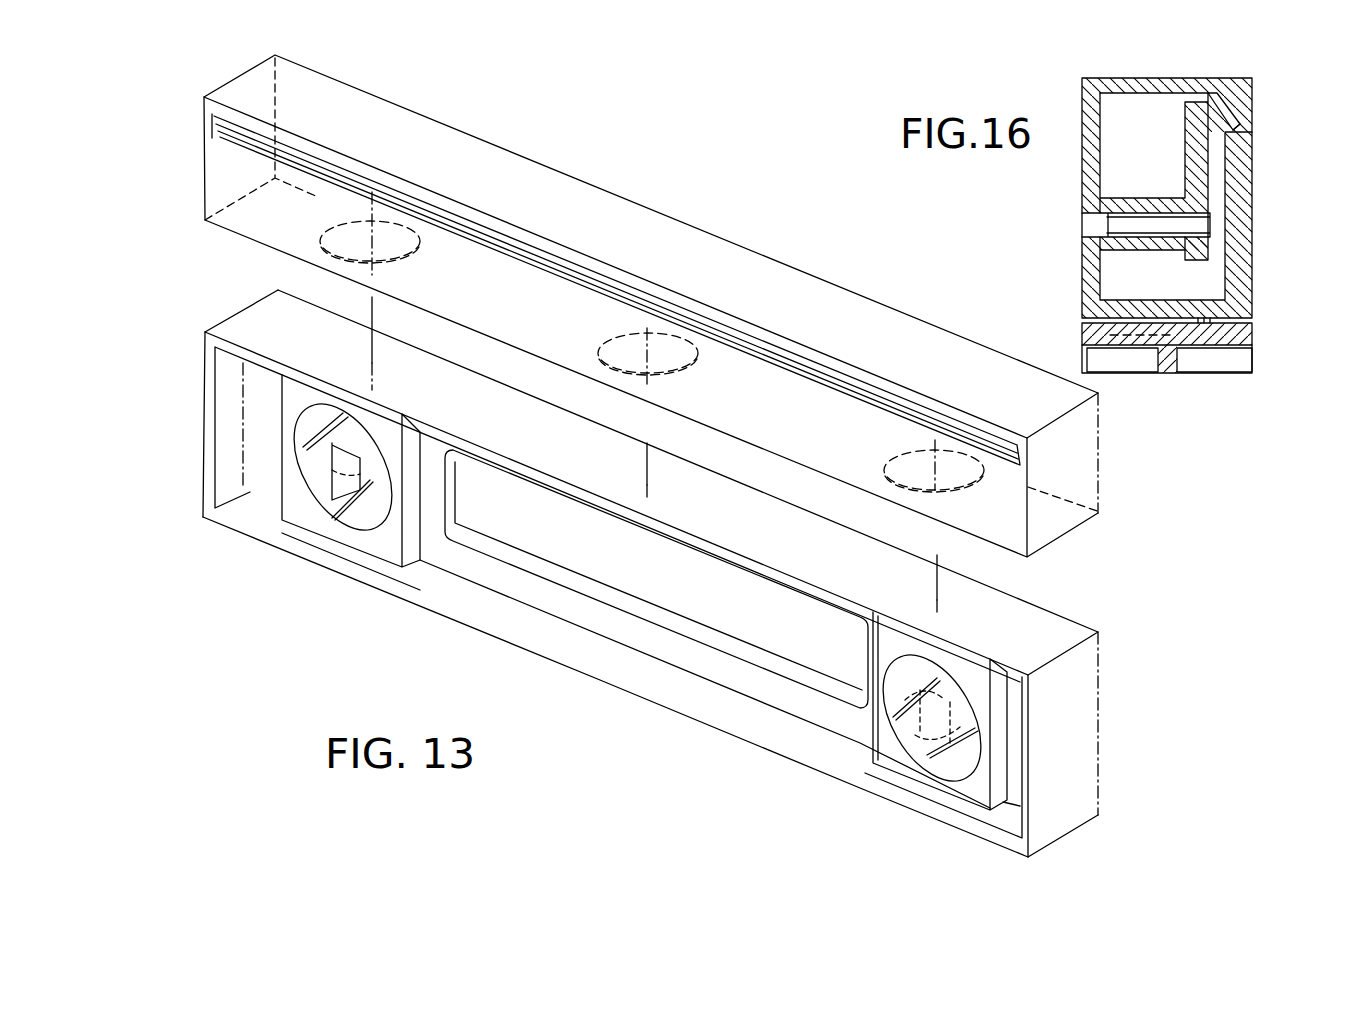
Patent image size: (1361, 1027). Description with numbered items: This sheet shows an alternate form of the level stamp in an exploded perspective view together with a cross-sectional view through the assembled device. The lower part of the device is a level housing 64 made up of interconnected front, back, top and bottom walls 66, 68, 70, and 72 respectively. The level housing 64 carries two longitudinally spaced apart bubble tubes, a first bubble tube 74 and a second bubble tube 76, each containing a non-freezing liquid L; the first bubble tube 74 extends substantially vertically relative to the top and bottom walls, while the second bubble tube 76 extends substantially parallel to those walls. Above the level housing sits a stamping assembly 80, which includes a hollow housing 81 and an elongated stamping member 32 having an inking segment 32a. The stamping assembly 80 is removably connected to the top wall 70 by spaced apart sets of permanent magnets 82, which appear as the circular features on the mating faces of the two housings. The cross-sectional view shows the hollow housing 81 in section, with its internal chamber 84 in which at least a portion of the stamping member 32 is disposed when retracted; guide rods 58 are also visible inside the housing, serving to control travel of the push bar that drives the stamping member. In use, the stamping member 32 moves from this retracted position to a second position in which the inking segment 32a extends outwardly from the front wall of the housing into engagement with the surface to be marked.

In FIG. 13, the stamping assembly 80 is at (660, 204).
In FIG. 16, the stamping assembly 80 is at (1155, 73).
In FIG. 13, the hollow housing 81 is at (817, 312).
In FIG. 16, the hollow housing 81 is at (1085, 175).
In FIG. 13, the permanent magnets 82 is at (342, 297).
In FIG. 16, the permanent magnets 82 is at (1207, 316).
In FIG. 13, the stamping member 32 is at (813, 368).
In FIG. 16, the stamping member 32 is at (1214, 96).
In FIG. 16, the inking segment 32a is at (1232, 104).
In FIG. 16, the internal chamber 84 is at (1142, 137).
In FIG. 16, the guide rods 58 is at (1153, 222).
In FIG. 13, the level housing 64 is at (385, 598).
In FIG. 16, the level housing 64 is at (1254, 333).
In FIG. 13, the front wall 66 is at (498, 633).
In FIG. 16, the front wall 66 is at (1253, 344).
In FIG. 13, the back wall 68 is at (1032, 602).
In FIG. 16, the back wall 68 is at (1085, 338).
In FIG. 13, the top wall 70 is at (803, 543).
In FIG. 13, the bottom wall 72 is at (747, 742).
In FIG. 13, the first bubble tube 74 is at (402, 418).
In FIG. 13, the second bubble tube 76 is at (930, 742).
In FIG. 13, the non-freezing liquid L is at (402, 418).